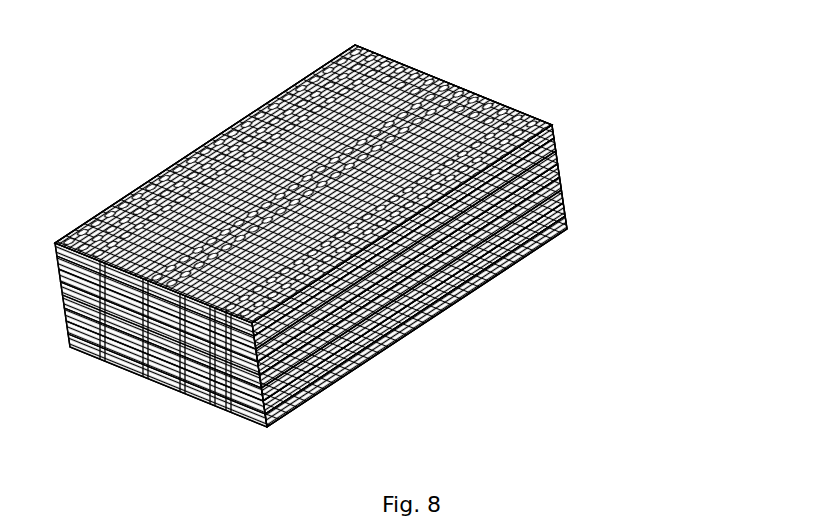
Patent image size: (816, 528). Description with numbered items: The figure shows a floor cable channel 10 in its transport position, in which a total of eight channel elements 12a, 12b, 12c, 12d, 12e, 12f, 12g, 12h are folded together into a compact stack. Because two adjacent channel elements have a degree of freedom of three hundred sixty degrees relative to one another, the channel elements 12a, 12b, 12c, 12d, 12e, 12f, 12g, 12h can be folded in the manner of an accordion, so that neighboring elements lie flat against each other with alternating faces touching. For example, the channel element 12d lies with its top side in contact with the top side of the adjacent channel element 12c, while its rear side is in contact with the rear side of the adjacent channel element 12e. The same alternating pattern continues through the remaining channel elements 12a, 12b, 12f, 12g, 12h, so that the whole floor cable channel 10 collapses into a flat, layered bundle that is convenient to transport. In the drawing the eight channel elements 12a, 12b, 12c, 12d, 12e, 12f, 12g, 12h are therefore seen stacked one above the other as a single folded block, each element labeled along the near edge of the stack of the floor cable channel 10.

The floor cable channel 10 is at (311, 216).
The channel element 12a is at (551, 133).
The channel element 12b is at (554, 143).
The channel element 12c is at (557, 155).
The channel element 12d is at (559, 168).
The channel element 12e is at (561, 181).
The channel element 12f is at (562, 196).
The channel element 12g is at (564, 209).
The channel element 12h is at (566, 224).